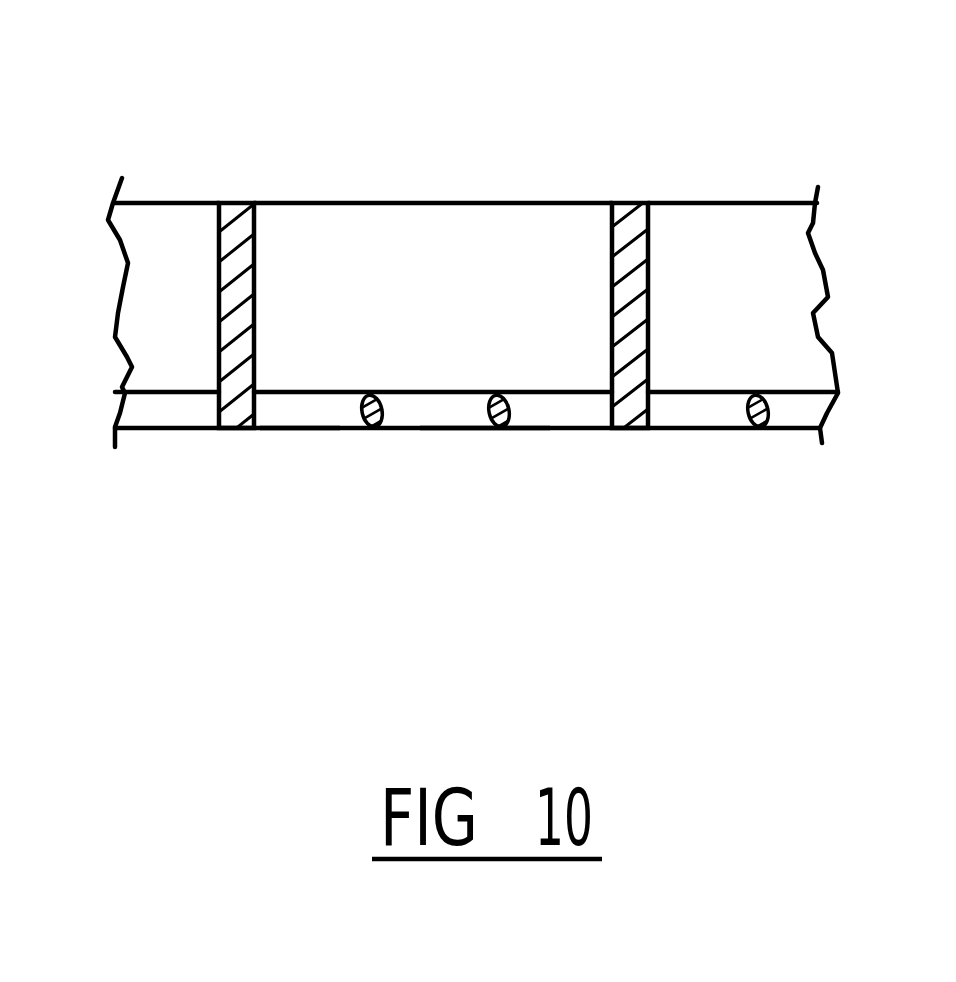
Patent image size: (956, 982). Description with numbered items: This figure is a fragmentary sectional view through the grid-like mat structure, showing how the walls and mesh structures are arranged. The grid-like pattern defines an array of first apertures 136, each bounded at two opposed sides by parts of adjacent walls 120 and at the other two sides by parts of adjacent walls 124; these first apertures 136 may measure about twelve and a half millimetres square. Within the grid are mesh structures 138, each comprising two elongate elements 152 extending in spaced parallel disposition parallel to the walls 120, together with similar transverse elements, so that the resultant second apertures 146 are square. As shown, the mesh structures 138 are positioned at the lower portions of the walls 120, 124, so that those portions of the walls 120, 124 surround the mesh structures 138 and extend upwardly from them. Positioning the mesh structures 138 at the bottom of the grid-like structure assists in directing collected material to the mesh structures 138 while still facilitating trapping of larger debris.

The walls 120 is at (219, 272).
The walls 124 is at (777, 203).
The first apertures 136 is at (438, 217).
The mesh structures 138 is at (296, 432).
The second apertures 146 is at (534, 407).
The elongate elements 152 is at (505, 418).